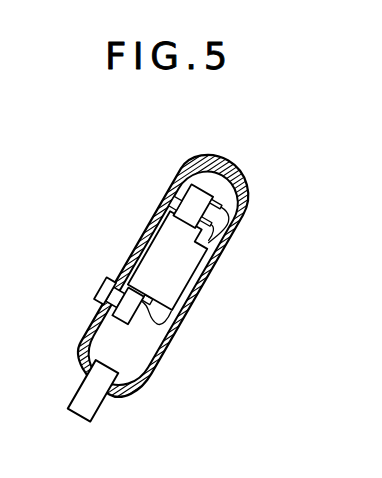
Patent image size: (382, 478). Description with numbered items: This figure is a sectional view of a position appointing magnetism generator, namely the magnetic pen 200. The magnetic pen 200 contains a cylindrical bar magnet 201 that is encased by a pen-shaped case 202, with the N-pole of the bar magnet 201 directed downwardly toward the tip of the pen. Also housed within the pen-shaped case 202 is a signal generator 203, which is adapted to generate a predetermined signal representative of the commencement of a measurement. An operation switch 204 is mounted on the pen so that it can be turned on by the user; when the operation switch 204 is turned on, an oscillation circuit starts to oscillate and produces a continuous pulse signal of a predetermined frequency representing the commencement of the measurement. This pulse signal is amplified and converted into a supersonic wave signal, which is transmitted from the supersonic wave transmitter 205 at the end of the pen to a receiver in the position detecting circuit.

The magnetic pen 200 is at (251, 193).
The cylindrical bar magnet 201 is at (102, 400).
The pen-shaped case 202 is at (232, 156).
The signal generator 203 is at (185, 281).
The operation switch 204 is at (100, 300).
The supersonic wave transmitter 205 is at (183, 212).